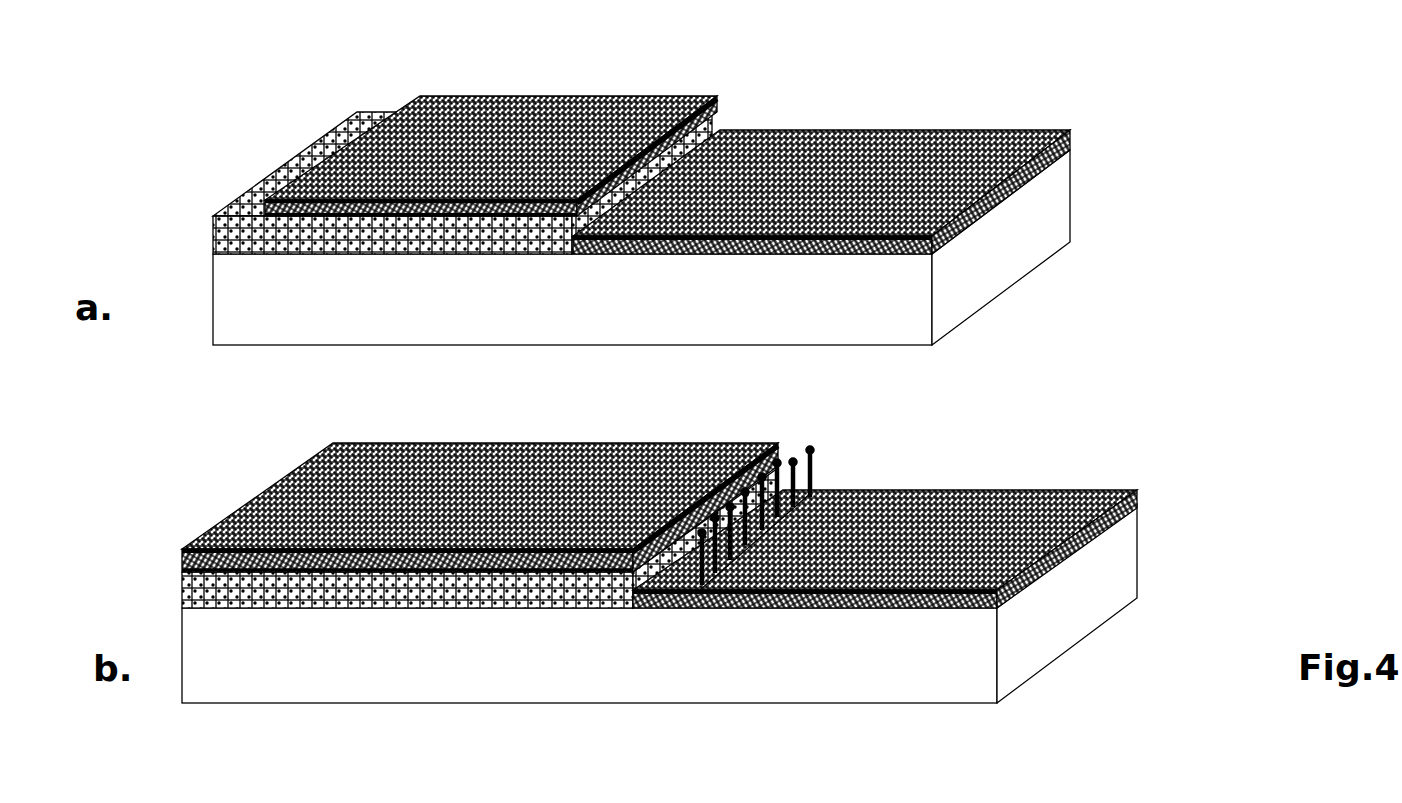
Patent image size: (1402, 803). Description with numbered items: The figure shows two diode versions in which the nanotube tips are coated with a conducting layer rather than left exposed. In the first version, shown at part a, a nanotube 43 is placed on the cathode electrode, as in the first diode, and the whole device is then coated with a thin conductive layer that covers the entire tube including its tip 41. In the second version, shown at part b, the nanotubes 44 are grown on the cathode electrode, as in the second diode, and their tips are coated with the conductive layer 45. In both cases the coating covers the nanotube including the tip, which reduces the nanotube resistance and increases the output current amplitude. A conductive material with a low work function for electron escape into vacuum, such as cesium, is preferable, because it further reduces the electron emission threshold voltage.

The tip 41 is at (717, 140).
The nanotube 43 is at (677, 140).
The nanotubes 44 is at (823, 467).
The conductive layer 45 is at (810, 413).